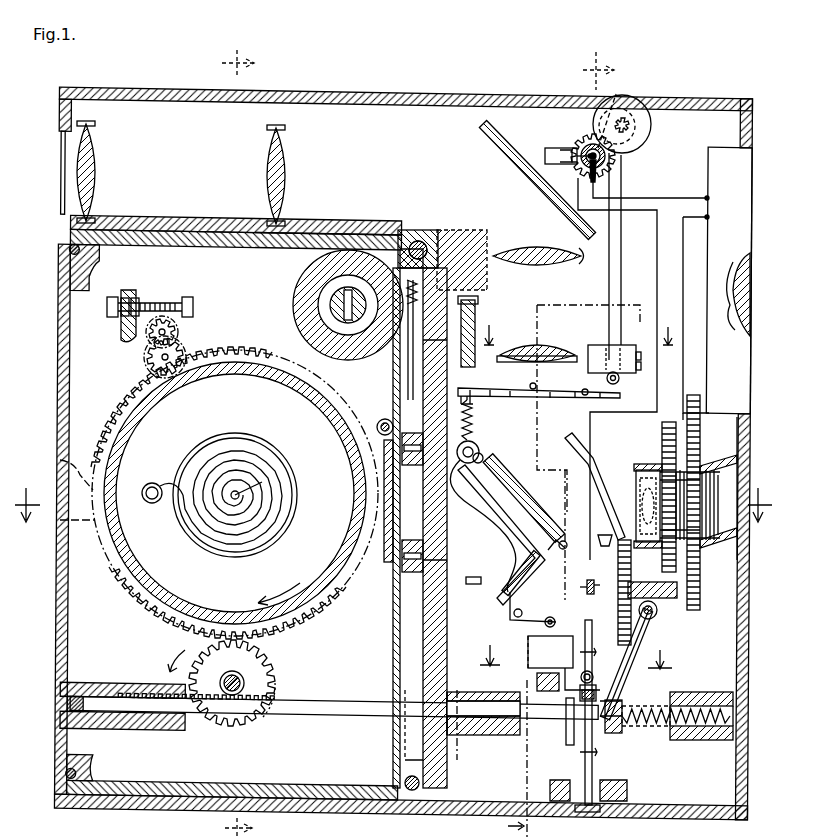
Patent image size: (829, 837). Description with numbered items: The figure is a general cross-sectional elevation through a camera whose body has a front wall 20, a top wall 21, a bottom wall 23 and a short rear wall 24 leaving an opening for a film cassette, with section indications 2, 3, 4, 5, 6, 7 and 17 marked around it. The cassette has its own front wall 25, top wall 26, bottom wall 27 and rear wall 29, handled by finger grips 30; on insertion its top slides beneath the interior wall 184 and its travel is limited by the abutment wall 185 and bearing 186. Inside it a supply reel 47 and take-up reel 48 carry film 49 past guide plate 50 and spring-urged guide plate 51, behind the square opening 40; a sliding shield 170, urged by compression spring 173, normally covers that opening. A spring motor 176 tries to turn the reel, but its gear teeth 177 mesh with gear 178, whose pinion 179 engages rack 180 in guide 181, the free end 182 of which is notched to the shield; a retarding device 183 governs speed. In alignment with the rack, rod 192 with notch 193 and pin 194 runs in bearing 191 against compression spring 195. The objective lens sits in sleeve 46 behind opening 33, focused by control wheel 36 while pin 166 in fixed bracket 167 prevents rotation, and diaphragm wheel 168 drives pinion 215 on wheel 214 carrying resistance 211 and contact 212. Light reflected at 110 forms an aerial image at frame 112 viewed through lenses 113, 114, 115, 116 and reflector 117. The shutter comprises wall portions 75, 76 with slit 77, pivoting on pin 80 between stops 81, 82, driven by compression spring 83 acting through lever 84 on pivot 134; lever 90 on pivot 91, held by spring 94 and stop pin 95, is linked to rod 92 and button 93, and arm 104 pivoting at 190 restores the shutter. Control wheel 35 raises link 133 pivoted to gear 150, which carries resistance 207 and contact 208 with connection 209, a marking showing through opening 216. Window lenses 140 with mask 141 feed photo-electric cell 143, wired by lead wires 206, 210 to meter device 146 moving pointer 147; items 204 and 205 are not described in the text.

The front wall 20 is at (745, 580).
The top wall 21 is at (400, 96).
The bottom wall 23 is at (290, 812).
The rear wall 24 is at (58, 118).
The front wall 25 is at (424, 598).
The top wall 26 is at (190, 240).
The bottom wall 27 is at (280, 790).
The rear wall 29 is at (60, 369).
The finger grips 30 is at (58, 458).
The opening 33 is at (740, 462).
The control wheel 35 is at (632, 97).
The control wheel 36 is at (700, 600).
The opening 40 is at (424, 545).
The cylindrical sleeve 46 is at (692, 462).
The supply reel 47 is at (300, 280).
The take-up reel 48 is at (355, 428).
The film 49 is at (394, 378).
The guide plate 50 is at (386, 455).
The guide plate 51 is at (392, 560).
The opaque wall portion 75 is at (482, 455).
The opaque wall portion 76 is at (516, 566).
The slit 77 is at (560, 585).
The pin 80 is at (480, 485).
The stop 81 is at (472, 586).
The stop 82 is at (605, 532).
The compression spring 83 is at (474, 415).
The lever 84 is at (578, 395).
The lever 90 is at (518, 618).
The fixed pivot 91 is at (552, 616).
The rod 92 is at (593, 770).
The button 93 is at (590, 812).
The spring 94 is at (564, 663).
The stop pin 95 is at (508, 618).
The arm 104 is at (612, 488).
The reflection point 110 is at (540, 510).
The frame 112 is at (478, 389).
The lens 113 is at (540, 344).
The lens 114 is at (508, 268).
The lens 115 is at (289, 160).
The lens 116 is at (100, 166).
The reflector 117 is at (545, 185).
The link 133 is at (614, 292).
The pivot 134 is at (530, 390).
The lenses 140 is at (752, 298).
The mask 141 is at (728, 318).
The photo-electric cell 143 is at (729, 280).
The device 146 is at (625, 350).
The pointer 147 is at (530, 340).
The gear 150 is at (566, 148).
The pin 166 is at (648, 464).
The fixed bracket 167 is at (608, 462).
The control wheel 168 is at (668, 420).
The sliding shield 170 is at (424, 625).
The compression spring 173 is at (400, 232).
The spring motor 176 is at (222, 432).
The gear teeth 177 is at (230, 350).
The gear 178 is at (276, 670).
The pinion 179 is at (240, 678).
The rack 180 is at (195, 716).
The guide 181 is at (128, 688).
The free end 182 is at (424, 712).
The retarding device 183 is at (197, 296).
The interior wall 184 is at (350, 238).
The abutment wall 185 is at (470, 236).
The bearing 186 is at (477, 694).
The pivot 190 is at (656, 616).
The bearing 191 is at (690, 692).
The rod 192 is at (569, 722).
The notch 193 is at (536, 725).
The pin 194 is at (617, 735).
The compression spring 195 is at (700, 740).
The lever 204 is at (628, 680).
The arc 205 is at (255, 720).
The lead wire 206 is at (652, 198).
The resistance 207 is at (588, 138).
The contact 208 is at (556, 150).
The connection 209 is at (648, 262).
The lead wire 210 is at (686, 290).
The resistance 211 is at (598, 590).
The contact 212 is at (580, 587).
The wheel 214 is at (594, 676).
The pinion 215 is at (680, 600).
The opening 216 is at (617, 107).
The section line 2 is at (393, 521).
The section line 3 is at (246, 443).
The section line 4 is at (590, 71).
The section line 5 is at (522, 829).
The section line 6 is at (577, 658).
The section line 7 is at (594, 702).
The section line 17 is at (580, 326).